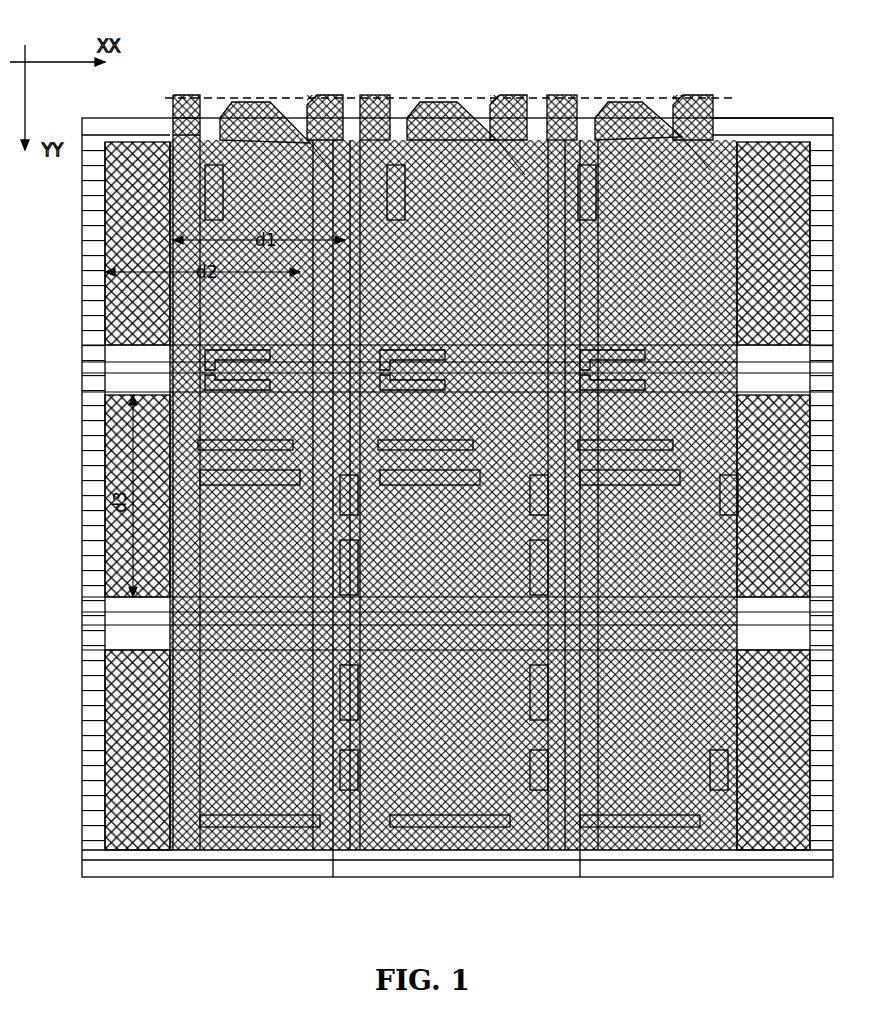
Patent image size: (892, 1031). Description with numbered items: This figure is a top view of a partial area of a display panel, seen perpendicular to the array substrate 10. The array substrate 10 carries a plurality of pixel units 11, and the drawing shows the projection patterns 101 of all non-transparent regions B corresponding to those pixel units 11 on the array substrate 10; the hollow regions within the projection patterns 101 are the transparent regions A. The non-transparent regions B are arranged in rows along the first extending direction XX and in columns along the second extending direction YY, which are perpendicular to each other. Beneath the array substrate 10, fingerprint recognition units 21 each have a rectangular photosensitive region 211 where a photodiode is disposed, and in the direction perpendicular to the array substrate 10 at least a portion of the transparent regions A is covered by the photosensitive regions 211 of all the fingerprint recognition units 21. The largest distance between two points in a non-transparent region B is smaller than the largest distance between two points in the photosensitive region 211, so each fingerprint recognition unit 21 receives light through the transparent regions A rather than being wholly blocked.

The array substrate 10 is at (215, 432).
The projection pattern 101 is at (231, 34).
The pixel unit 11 is at (420, 102).
The fingerprint recognition unit 21 is at (756, 118).
The photosensitive region 211 is at (785, 142).